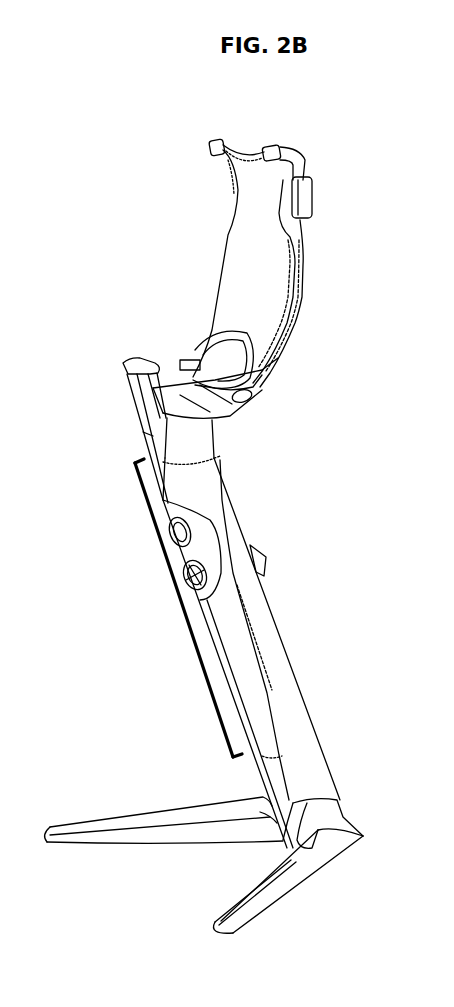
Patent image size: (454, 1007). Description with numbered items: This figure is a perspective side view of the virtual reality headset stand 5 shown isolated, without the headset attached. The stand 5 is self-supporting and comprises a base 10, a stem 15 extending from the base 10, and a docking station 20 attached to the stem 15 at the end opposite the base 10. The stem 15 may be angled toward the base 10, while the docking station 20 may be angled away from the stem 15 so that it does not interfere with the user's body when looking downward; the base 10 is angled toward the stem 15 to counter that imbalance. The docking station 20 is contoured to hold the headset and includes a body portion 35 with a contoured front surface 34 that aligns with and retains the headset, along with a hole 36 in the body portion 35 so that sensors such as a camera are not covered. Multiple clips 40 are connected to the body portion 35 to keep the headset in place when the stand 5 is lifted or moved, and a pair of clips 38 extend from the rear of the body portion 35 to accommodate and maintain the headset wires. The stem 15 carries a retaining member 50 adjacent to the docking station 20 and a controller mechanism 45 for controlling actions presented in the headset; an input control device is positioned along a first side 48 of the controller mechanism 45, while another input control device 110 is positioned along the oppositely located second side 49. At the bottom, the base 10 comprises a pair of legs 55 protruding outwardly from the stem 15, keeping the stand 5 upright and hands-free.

The virtual reality headset stand 5 is at (76, 270).
The base 10 is at (289, 849).
The stem 15 is at (322, 770).
The docking station 20 is at (290, 332).
The contoured front surface 34 is at (264, 286).
The body portion 35 is at (305, 268).
The hole 36 is at (237, 360).
The clips 38 is at (313, 196).
The clip 40 is at (223, 143).
The controller mechanism 45 is at (170, 578).
The first side 48 is at (230, 628).
The second side 49 is at (268, 585).
The retaining member 50 is at (122, 373).
The legs 55 is at (70, 845).
The input control device 110 is at (260, 550).